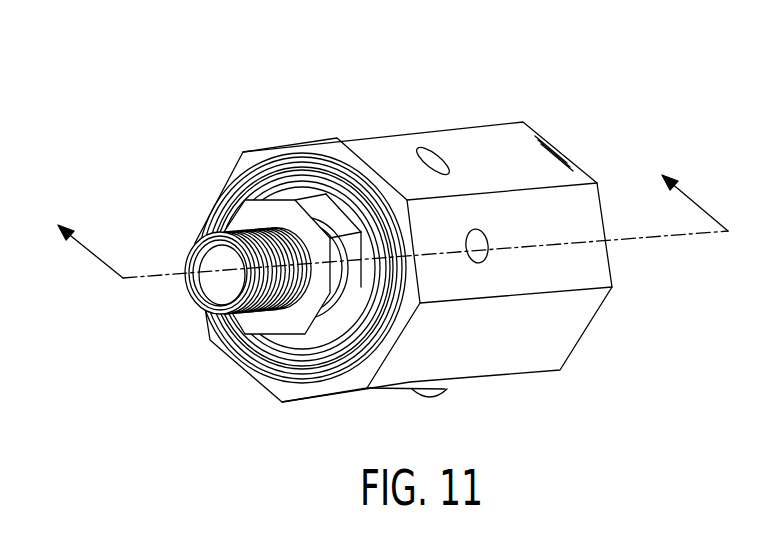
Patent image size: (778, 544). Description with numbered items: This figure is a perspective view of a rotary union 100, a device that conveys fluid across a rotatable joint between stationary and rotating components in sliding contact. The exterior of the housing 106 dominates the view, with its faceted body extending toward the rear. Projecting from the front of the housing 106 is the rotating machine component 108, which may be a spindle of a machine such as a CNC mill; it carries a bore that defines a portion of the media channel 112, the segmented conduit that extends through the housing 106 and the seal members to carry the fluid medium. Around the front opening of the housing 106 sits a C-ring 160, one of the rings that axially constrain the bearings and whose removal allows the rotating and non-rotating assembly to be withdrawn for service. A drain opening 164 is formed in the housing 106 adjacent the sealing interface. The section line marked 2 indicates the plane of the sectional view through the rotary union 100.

The rotary union 100 is at (383, 212).
The housing 106 is at (597, 262).
The rotating machine component 108 is at (190, 246).
The media channel 112 is at (196, 288).
The C-ring 160 is at (279, 178).
The drain opening 164 is at (488, 241).
The section line 2- 2 is at (383, 217).